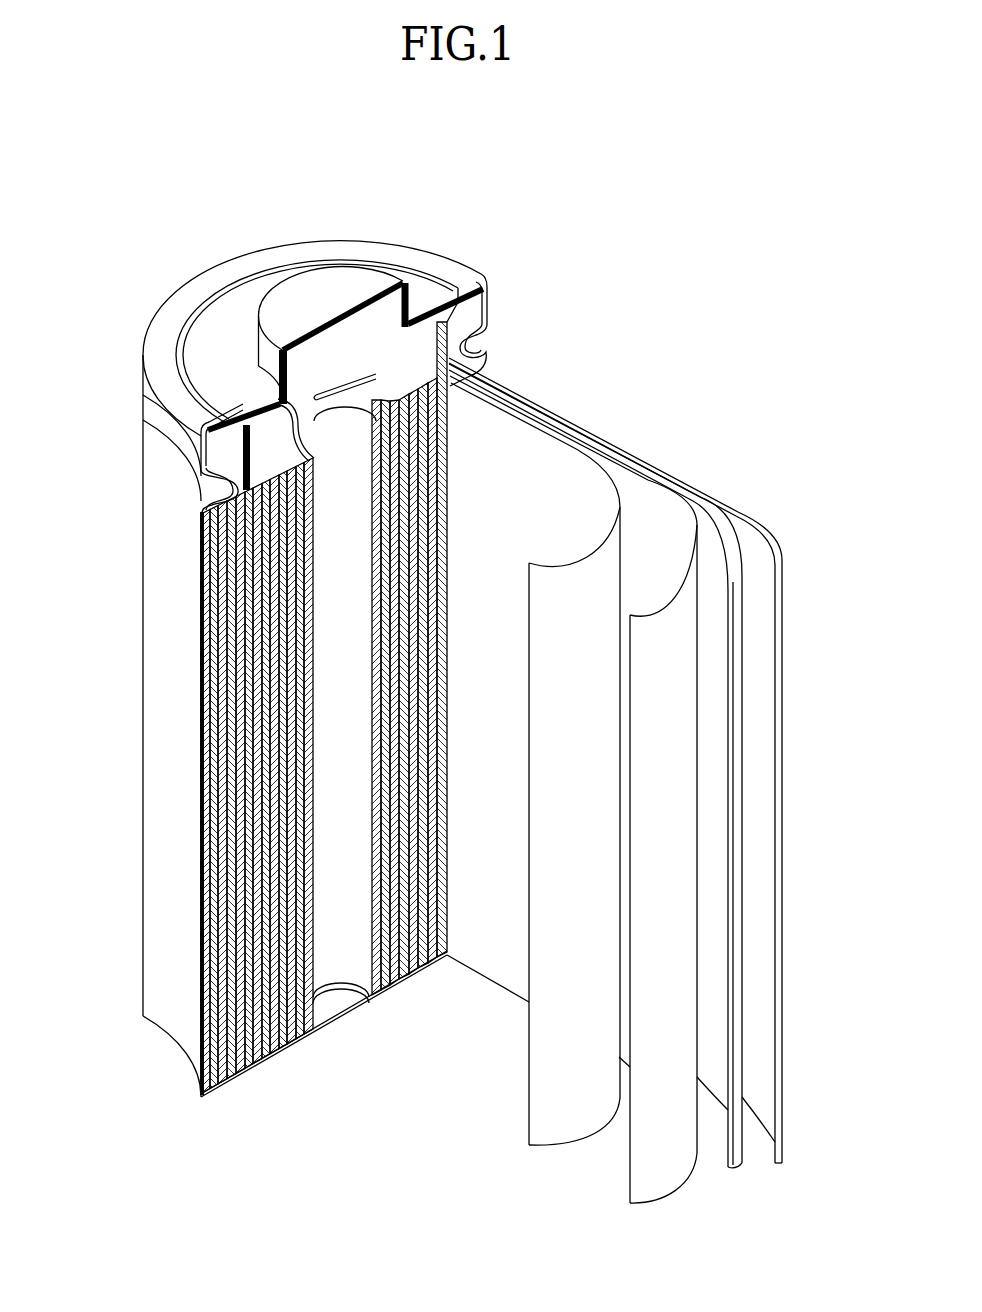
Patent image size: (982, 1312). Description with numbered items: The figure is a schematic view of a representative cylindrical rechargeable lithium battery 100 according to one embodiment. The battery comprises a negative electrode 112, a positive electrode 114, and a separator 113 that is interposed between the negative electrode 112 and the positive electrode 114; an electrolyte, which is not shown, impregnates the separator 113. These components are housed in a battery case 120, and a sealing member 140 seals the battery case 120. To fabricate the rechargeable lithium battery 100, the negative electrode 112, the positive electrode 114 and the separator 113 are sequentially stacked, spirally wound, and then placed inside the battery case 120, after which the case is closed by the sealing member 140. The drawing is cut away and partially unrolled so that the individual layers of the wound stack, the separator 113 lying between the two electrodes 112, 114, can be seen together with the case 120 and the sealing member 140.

The rechargeable lithium battery 100 is at (554, 214).
The battery case 120 is at (157, 664).
The sealing member 140 is at (278, 305).
The separator 113 is at (567, 452).
The positive electrode 114 is at (657, 510).
The negative electrode 112 is at (778, 572).